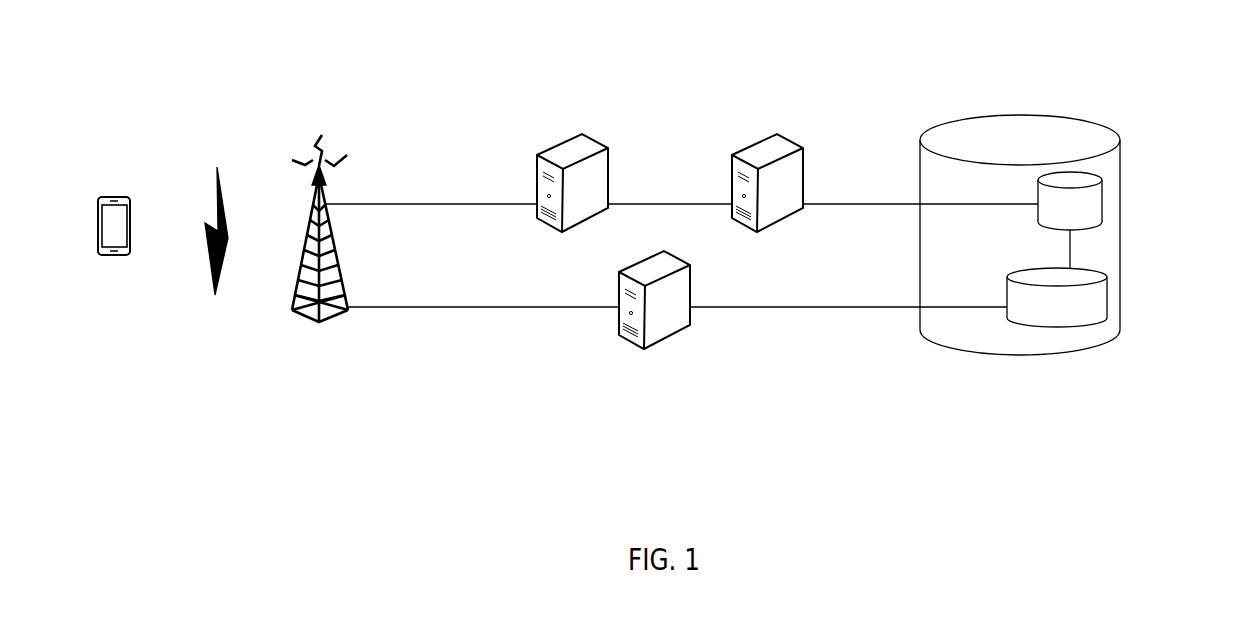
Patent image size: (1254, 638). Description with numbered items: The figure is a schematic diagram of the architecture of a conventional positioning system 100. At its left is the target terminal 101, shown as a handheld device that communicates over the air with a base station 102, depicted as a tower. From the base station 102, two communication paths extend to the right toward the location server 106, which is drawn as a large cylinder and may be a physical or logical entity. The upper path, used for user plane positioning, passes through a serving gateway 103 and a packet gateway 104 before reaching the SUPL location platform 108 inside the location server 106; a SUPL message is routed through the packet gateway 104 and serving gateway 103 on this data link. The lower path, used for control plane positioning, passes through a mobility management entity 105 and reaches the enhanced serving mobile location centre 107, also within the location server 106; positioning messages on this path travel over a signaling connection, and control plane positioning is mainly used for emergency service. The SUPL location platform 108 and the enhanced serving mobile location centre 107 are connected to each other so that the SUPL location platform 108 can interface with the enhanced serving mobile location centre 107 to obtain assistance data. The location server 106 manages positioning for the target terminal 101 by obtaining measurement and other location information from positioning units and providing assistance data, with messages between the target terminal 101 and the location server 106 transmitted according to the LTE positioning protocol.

The positioning system 100 is at (1120, 63).
The target terminal 101 is at (112, 257).
The base station 102 is at (313, 327).
The serving gateway 103 is at (573, 133).
The packet gateway 104 is at (768, 133).
The mobility management entity 105 is at (642, 350).
The location server 106 is at (955, 342).
The enhanced serving mobile location centre 107 is at (1107, 298).
The SUPL location platform 108 is at (1102, 205).